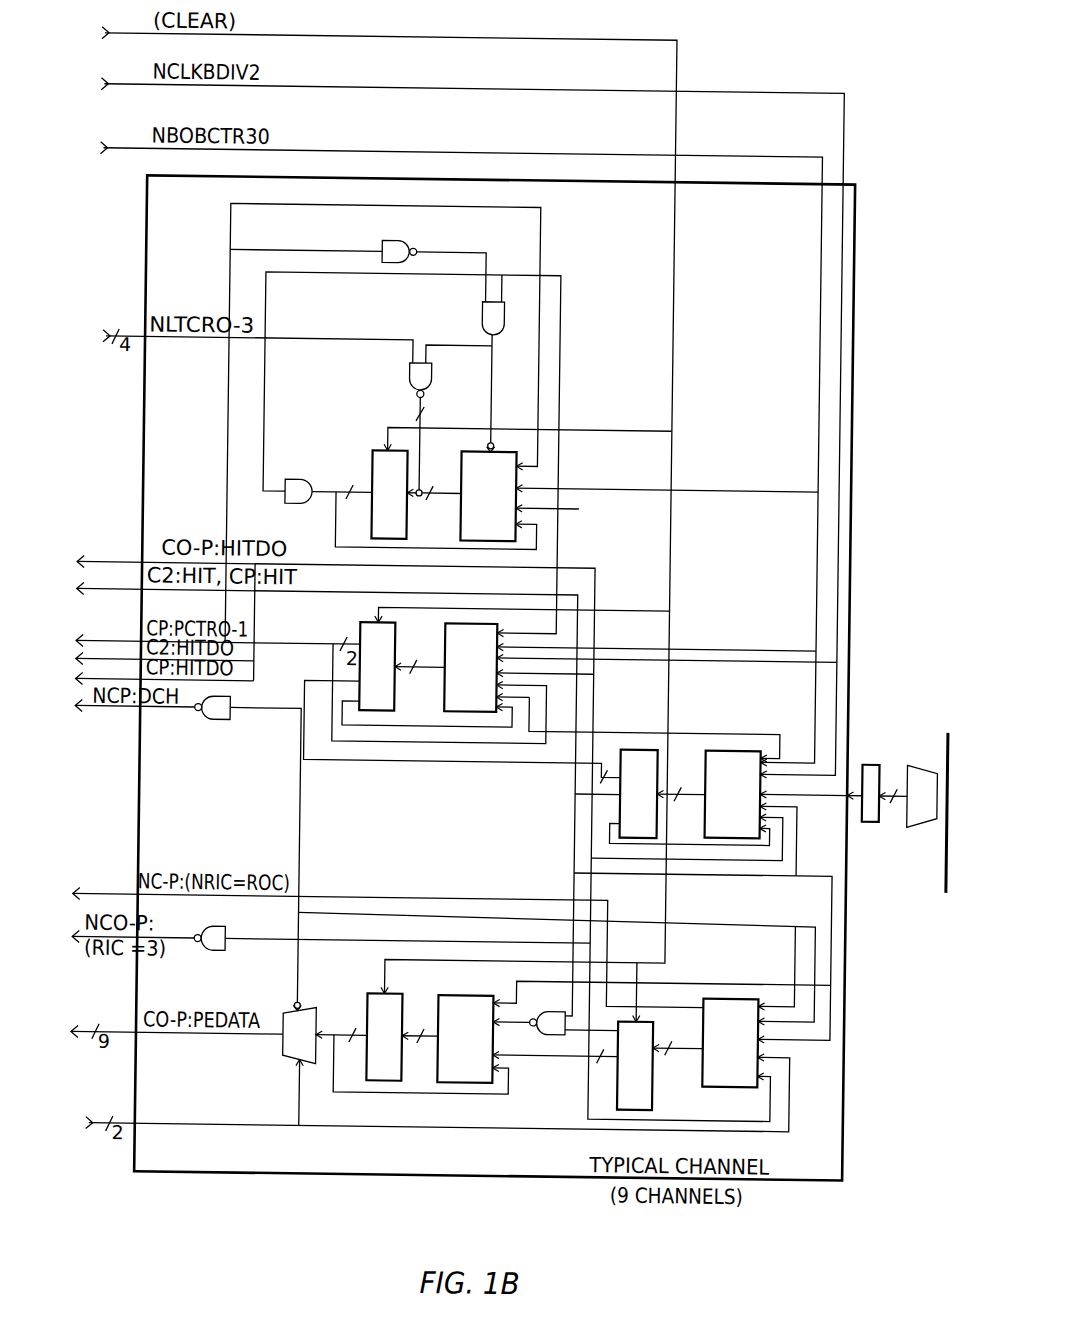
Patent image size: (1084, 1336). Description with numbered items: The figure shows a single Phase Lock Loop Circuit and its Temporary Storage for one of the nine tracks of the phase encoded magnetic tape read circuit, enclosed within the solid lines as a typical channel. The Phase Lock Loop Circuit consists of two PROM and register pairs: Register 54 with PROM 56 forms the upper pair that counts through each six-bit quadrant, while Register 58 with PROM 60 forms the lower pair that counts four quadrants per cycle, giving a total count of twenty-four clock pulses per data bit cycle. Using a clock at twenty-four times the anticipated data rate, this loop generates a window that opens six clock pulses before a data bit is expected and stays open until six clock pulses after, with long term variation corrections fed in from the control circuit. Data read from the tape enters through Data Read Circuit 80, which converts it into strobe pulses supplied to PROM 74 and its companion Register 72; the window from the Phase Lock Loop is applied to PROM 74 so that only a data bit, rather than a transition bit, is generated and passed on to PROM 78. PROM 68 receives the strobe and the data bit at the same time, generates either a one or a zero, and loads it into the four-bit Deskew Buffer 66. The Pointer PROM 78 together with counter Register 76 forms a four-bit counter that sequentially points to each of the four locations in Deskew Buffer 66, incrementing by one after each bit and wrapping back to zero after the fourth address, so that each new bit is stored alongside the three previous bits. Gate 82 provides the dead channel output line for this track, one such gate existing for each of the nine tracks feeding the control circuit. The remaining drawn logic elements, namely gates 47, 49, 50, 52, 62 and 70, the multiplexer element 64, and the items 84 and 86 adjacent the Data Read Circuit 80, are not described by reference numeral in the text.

The NAND gate 47 is at (390, 242).
The AND gate 49 is at (478, 318).
The NAND gate 50 is at (406, 380).
The AND gate 52 is at (293, 482).
The register 54 is at (370, 462).
The PROM 56 is at (510, 452).
The register 58 is at (360, 630).
The PROM 60 is at (445, 650).
The NAND gate 62 is at (229, 933).
The multiplexer 64 is at (288, 1016).
The deskew buffer 66 is at (372, 1000).
The PROM 68 is at (450, 996).
The NAND gate 70 is at (553, 1012).
The register 72 is at (622, 760).
The PROM 74 is at (707, 765).
The register 76 is at (658, 1040).
The PROM 78 is at (718, 996).
The data read circuit 80 is at (875, 760).
The gate 82 is at (212, 727).
The transducer element 84 is at (939, 816).
The bar 86 is at (949, 856).